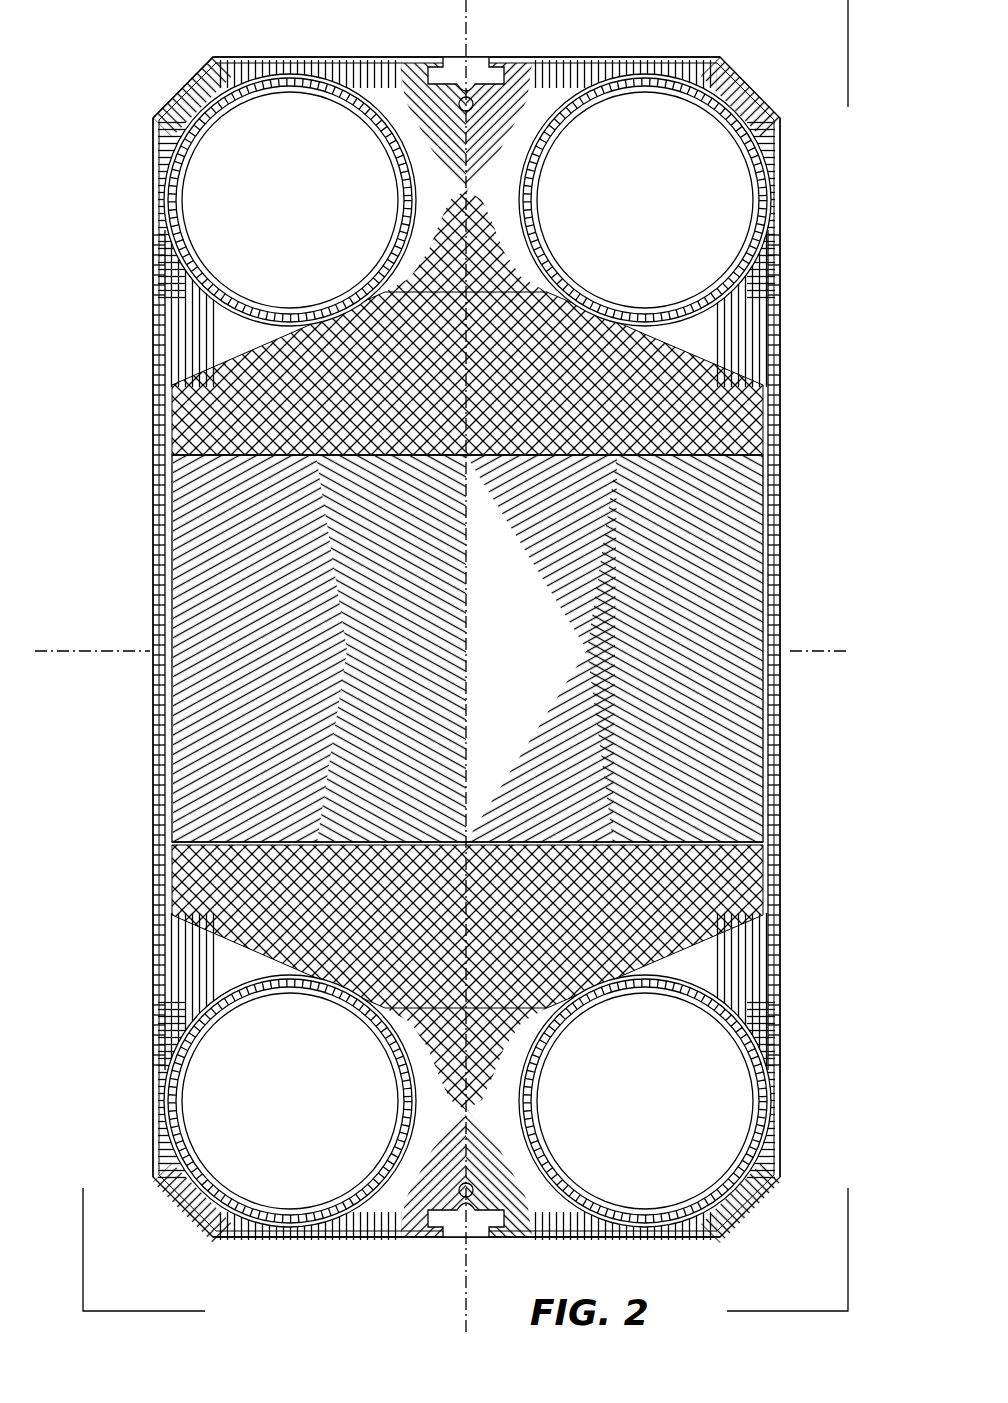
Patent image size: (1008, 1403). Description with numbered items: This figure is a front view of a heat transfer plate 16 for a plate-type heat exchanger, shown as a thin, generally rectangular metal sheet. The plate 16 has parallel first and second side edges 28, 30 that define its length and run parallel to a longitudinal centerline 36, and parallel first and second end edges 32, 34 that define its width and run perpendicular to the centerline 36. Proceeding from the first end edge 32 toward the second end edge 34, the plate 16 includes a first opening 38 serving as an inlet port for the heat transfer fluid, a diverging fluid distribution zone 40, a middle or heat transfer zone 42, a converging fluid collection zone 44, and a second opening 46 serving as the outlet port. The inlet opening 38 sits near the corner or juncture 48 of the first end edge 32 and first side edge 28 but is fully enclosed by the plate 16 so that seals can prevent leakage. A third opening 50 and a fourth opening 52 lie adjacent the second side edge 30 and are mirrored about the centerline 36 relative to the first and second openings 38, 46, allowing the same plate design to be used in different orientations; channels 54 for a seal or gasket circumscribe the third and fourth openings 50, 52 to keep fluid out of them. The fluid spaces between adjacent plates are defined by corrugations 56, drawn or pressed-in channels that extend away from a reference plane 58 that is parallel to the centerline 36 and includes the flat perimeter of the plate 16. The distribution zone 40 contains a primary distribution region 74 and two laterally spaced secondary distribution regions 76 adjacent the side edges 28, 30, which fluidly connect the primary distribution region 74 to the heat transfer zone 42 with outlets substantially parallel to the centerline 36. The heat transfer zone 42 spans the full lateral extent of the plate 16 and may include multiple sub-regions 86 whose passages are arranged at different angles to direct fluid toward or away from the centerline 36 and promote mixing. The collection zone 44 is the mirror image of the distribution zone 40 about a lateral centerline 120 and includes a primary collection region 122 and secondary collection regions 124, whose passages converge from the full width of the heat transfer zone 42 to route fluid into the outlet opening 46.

The plate 16 is at (762, 68).
The first side edge 28 is at (158, 292).
The second side edge 30 is at (780, 245).
The first end edge 32 is at (655, 55).
The second end edge 34 is at (676, 1238).
The longitudinal centerline 36 is at (462, 52).
The first opening 38 is at (192, 200).
The diverging fluid distribution zone 40 is at (820, 185).
The middle or heat transfer zone 42 is at (822, 455).
The converging fluid collection zone 44 is at (822, 845).
The second opening 46 is at (265, 1195).
The corner or juncture 48 is at (164, 73).
The third opening 50 is at (706, 114).
The fourth opening 52 is at (715, 1160).
The channels 54 is at (668, 985).
The corrugations 56 is at (298, 975).
The reference plane 58 is at (96, 1278).
The primary distribution region 74 is at (235, 348).
The secondary distribution region 76 is at (168, 458).
The sub-regions 86 is at (605, 793).
The lateral centerline 120 is at (108, 650).
The primary collection region 122 is at (205, 934).
The secondary collection region 124 is at (160, 850).